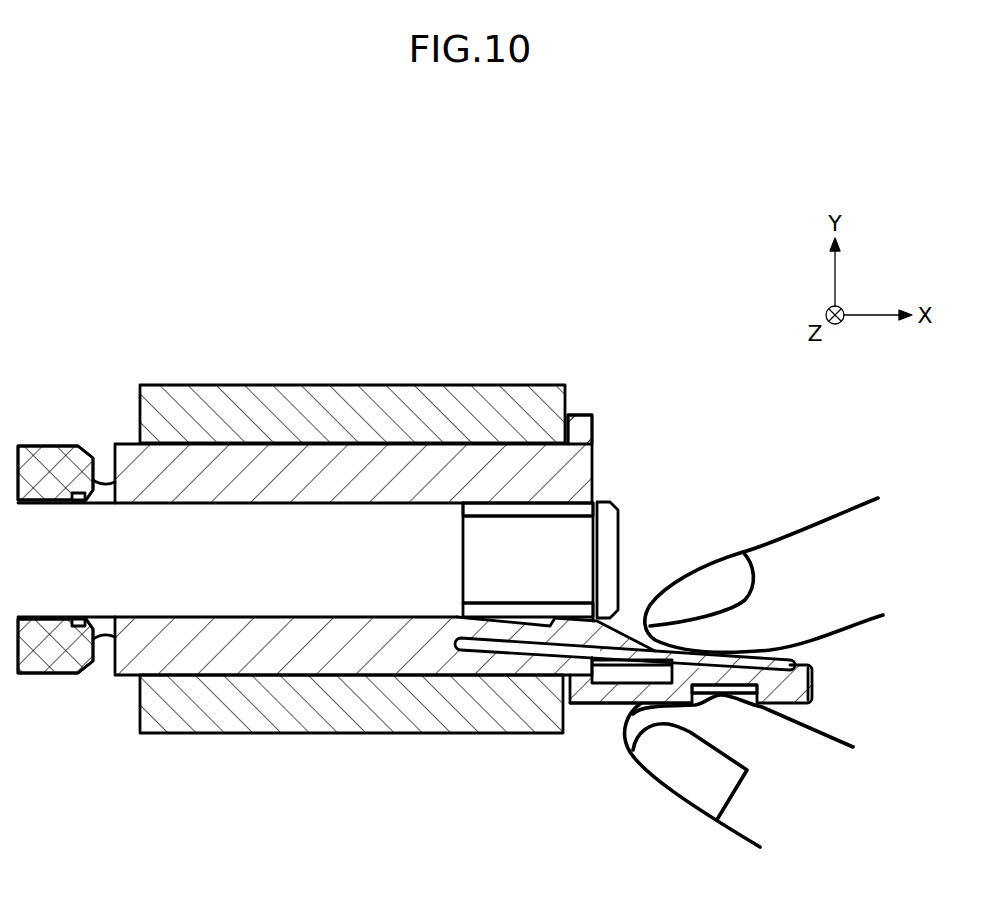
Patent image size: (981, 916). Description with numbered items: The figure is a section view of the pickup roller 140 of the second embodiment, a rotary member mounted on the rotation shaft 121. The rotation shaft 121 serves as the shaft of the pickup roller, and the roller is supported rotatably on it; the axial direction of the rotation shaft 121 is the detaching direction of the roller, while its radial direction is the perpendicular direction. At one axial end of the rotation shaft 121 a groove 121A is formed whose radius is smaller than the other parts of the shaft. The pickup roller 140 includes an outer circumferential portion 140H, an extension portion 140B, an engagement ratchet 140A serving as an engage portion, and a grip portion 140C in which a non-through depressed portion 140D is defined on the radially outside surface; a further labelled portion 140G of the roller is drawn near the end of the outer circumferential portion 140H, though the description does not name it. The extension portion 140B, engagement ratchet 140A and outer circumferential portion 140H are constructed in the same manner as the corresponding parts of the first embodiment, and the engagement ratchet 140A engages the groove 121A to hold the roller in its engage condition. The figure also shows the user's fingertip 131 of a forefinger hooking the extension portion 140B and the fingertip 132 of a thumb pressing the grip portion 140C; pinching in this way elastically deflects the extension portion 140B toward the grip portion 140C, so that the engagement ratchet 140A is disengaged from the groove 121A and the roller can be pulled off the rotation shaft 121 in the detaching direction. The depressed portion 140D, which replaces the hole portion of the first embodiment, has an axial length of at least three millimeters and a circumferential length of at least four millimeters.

The pickup roller 140 is at (537, 552).
The outer circumferential portion 140H is at (487, 385).
The housing projection 140G is at (592, 427).
The engagement ratchet 140A is at (695, 671).
The extension portion 140B is at (793, 658).
The grip portion 140C is at (825, 704).
The depressed portion 140D is at (697, 703).
The rotation shaft 121 is at (429, 544).
The groove 121A is at (560, 510).
The fingertip 131 is at (792, 550).
The fingertip 132 is at (752, 830).